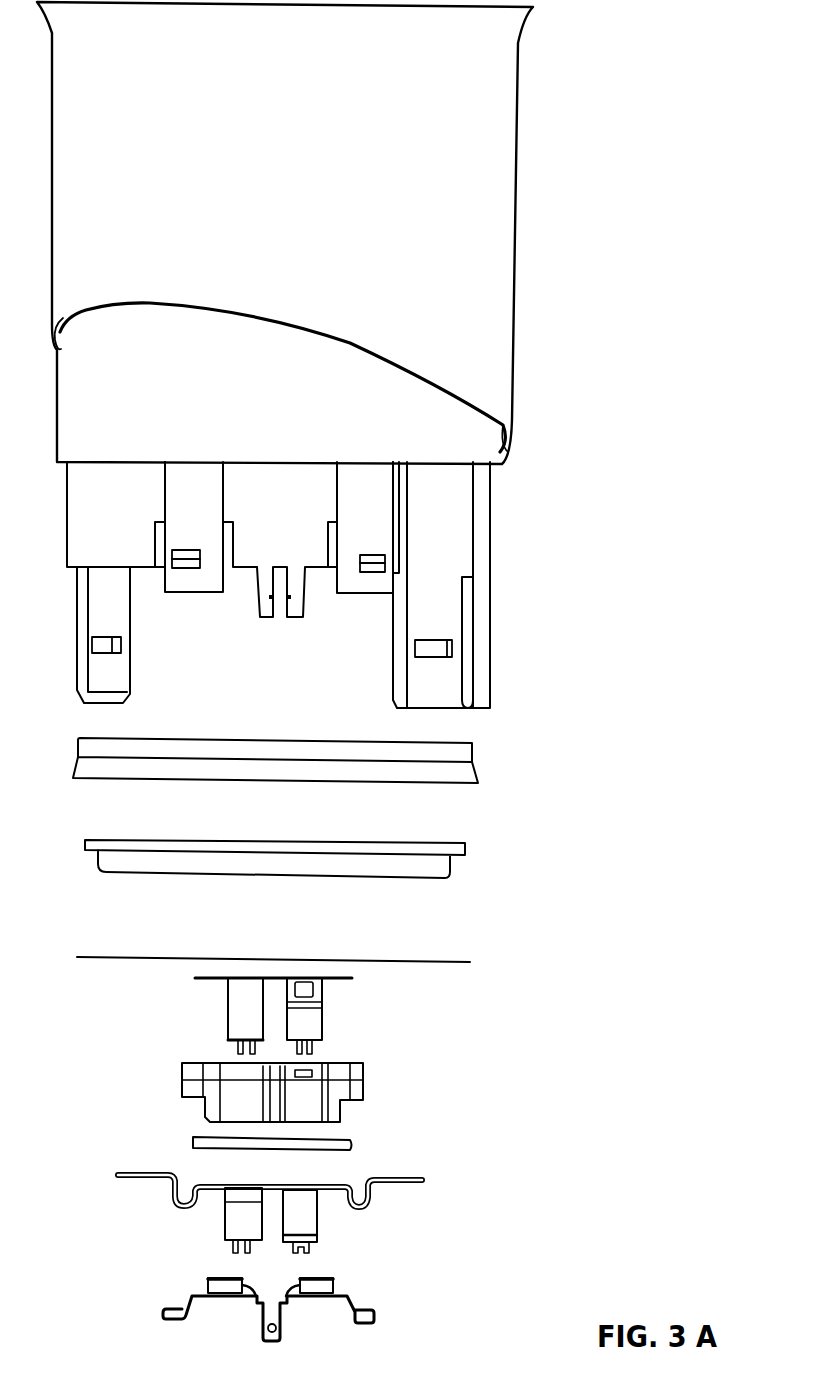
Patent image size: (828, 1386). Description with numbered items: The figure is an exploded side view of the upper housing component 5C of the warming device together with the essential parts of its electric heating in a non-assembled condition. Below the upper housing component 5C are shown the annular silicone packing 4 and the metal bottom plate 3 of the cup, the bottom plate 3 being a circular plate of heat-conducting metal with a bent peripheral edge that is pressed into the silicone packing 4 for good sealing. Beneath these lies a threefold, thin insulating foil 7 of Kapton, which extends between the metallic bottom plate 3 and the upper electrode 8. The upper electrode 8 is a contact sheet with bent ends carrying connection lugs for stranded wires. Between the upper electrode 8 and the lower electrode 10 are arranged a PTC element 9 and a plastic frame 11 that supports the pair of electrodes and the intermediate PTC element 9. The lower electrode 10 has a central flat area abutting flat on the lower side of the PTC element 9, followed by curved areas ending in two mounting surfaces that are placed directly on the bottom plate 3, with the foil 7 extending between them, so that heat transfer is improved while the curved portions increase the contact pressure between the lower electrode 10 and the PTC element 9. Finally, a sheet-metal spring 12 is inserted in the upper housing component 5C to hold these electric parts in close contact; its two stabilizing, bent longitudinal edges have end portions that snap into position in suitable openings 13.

The upper housing component 5C is at (498, 333).
The openings 13 is at (183, 567).
The silicone packing 4 is at (468, 753).
The bottom plate 3 is at (440, 868).
The insulating foil 7 is at (470, 962).
The upper electrode 8 is at (313, 1013).
The plastic frame 11 is at (332, 1103).
The PTC element 9 is at (350, 1145).
The lower electrode 10 is at (422, 1180).
The sheet-metal spring 12 is at (373, 1316).